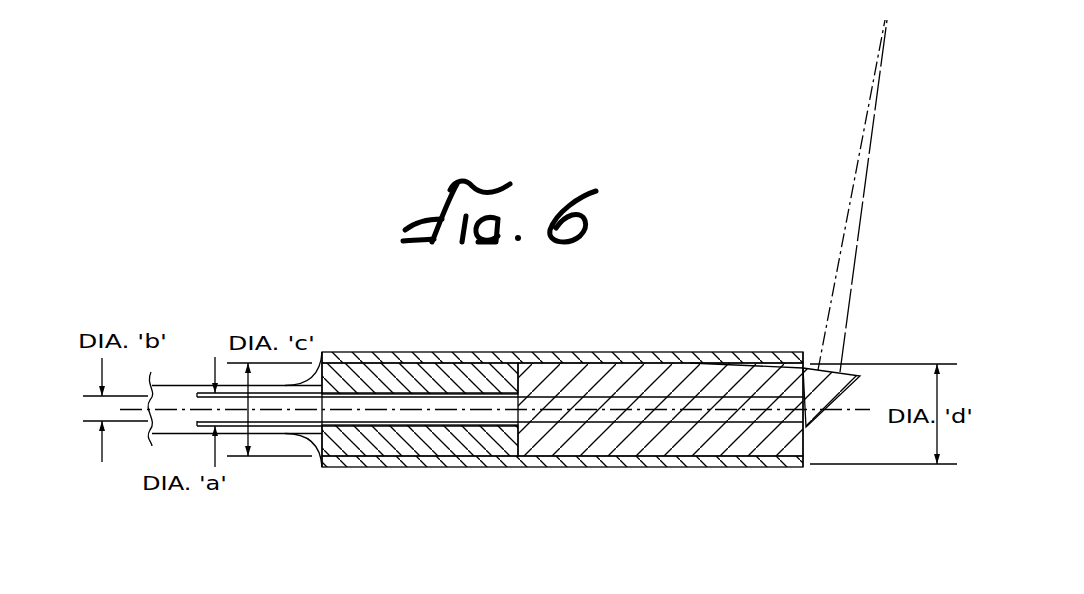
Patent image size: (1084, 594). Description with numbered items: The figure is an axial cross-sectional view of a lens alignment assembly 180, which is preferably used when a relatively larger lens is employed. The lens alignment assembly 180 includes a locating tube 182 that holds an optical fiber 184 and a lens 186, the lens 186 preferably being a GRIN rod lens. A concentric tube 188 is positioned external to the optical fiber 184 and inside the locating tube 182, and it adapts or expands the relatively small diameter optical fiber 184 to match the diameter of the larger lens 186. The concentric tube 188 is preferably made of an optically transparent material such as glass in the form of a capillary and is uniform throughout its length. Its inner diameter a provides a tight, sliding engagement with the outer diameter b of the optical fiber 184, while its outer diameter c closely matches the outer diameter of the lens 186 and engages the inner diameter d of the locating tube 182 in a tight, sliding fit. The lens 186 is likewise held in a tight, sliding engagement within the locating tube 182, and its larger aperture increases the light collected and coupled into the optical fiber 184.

The lens alignment assembly 180 is at (282, 503).
The locating tube 182 is at (630, 352).
The optical fiber 184 is at (420, 405).
The lens 186 is at (553, 388).
The concentric tube 188 is at (358, 380).